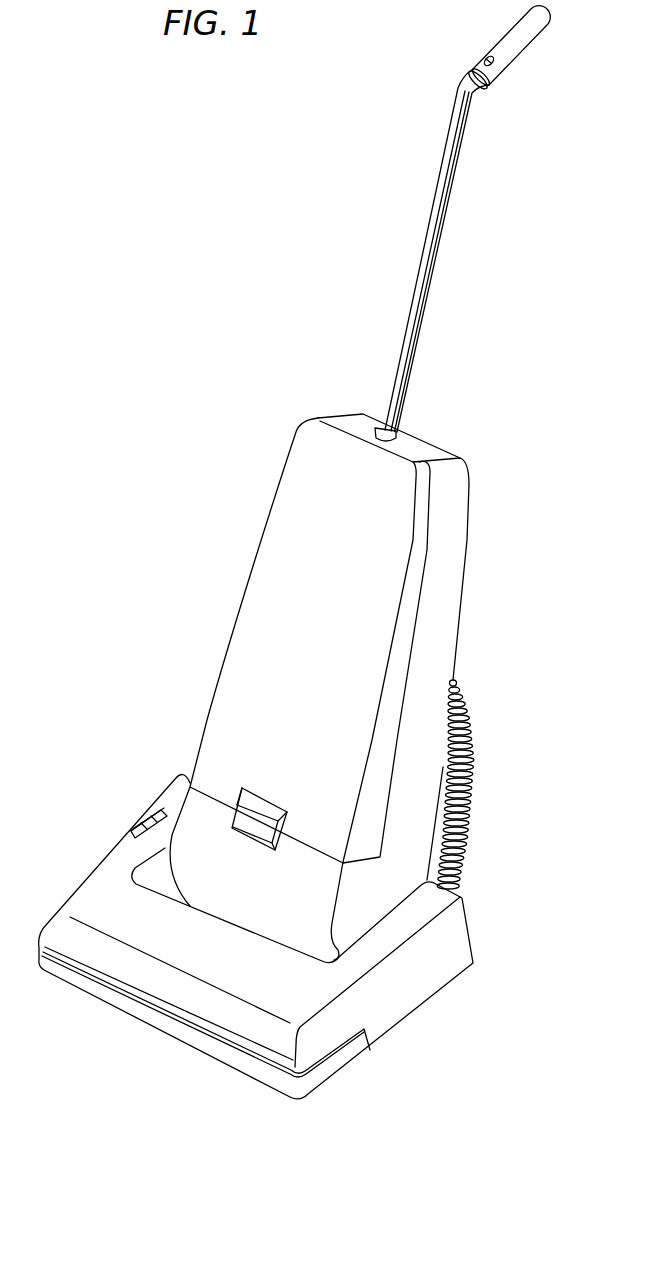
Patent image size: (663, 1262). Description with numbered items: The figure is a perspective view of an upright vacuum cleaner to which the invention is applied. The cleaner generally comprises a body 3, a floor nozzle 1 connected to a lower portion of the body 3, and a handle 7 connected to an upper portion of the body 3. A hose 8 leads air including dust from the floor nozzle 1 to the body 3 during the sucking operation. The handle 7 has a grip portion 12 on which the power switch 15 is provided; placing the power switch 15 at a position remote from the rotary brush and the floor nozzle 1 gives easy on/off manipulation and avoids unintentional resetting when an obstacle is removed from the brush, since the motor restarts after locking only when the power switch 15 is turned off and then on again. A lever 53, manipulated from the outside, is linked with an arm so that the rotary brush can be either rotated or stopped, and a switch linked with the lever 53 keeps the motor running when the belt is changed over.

The floor nozzle 1 is at (470, 930).
The body 3 is at (448, 601).
The handle 7 is at (437, 300).
The hose 8 is at (467, 753).
The grip portion 12 is at (512, 52).
The power switch 15 is at (488, 58).
The lever 53 is at (152, 818).